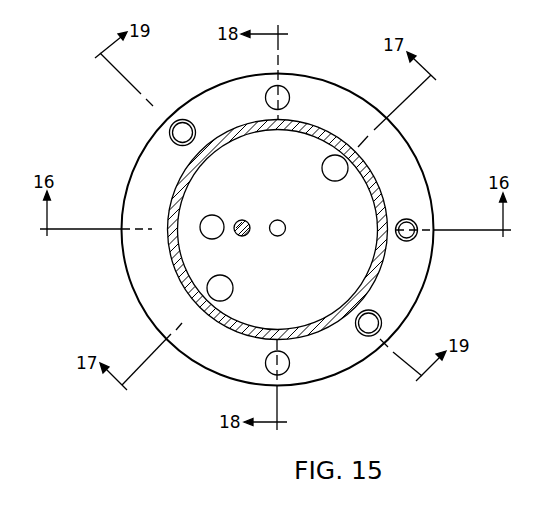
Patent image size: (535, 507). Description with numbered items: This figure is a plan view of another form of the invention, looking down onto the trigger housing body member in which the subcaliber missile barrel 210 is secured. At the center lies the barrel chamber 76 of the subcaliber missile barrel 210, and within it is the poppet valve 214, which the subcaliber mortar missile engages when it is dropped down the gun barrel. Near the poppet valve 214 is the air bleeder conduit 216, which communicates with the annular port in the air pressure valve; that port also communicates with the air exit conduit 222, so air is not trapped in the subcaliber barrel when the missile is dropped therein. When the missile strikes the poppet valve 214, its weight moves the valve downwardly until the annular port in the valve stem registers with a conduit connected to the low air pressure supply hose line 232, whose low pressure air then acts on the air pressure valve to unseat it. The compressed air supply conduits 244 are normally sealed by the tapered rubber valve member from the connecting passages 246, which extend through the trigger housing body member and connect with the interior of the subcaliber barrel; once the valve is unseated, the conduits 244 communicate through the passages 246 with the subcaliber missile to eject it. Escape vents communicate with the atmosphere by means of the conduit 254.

The barrel chamber 76 is at (292, 266).
The subcaliber missile barrel 210 is at (336, 141).
The conduit 254 is at (279, 96).
The air exit conduit 222 is at (279, 367).
The compressed air supply conduits 244 is at (177, 132).
The low air pressure supply hose line 232 is at (409, 230).
The connecting passages 246 is at (331, 168).
The air bleeder conduit 216 is at (215, 224).
The poppet valve 214 is at (280, 226).